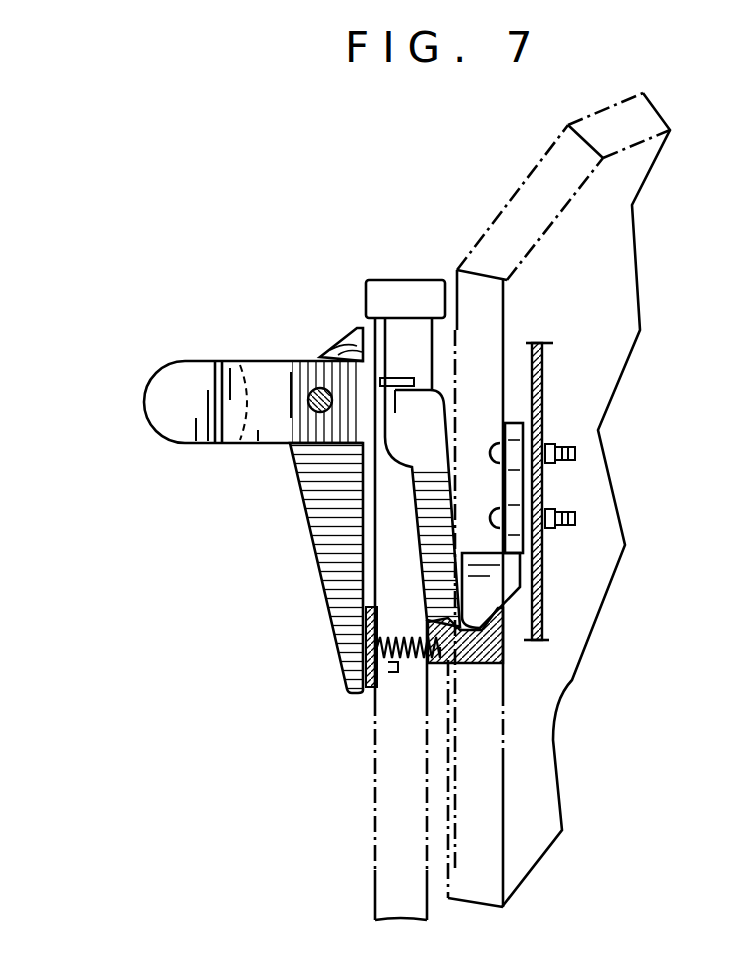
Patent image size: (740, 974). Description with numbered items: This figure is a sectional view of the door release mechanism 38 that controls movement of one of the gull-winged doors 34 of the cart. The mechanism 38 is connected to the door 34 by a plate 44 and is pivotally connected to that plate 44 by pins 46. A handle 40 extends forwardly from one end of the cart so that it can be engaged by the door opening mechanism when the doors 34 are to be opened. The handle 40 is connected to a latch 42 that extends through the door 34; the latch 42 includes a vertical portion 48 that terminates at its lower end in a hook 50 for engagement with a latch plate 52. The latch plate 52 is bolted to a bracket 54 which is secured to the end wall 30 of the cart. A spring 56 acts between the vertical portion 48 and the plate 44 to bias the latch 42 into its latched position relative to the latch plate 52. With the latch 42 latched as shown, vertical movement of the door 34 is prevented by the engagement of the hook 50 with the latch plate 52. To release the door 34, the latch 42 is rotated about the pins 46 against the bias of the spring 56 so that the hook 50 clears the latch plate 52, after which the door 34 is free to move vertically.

The end wall 30 is at (448, 876).
The gull-winged door 34 is at (405, 332).
The door release mechanism 38 is at (140, 362).
The handle 40 is at (173, 362).
The latch 42 is at (253, 432).
The plate 44 is at (330, 550).
The pin 46 is at (316, 390).
The vertical portion 48 is at (442, 530).
The hook 50 is at (500, 660).
The latch plate 52 is at (512, 592).
The bracket 54 is at (544, 556).
The spring 56 is at (422, 670).